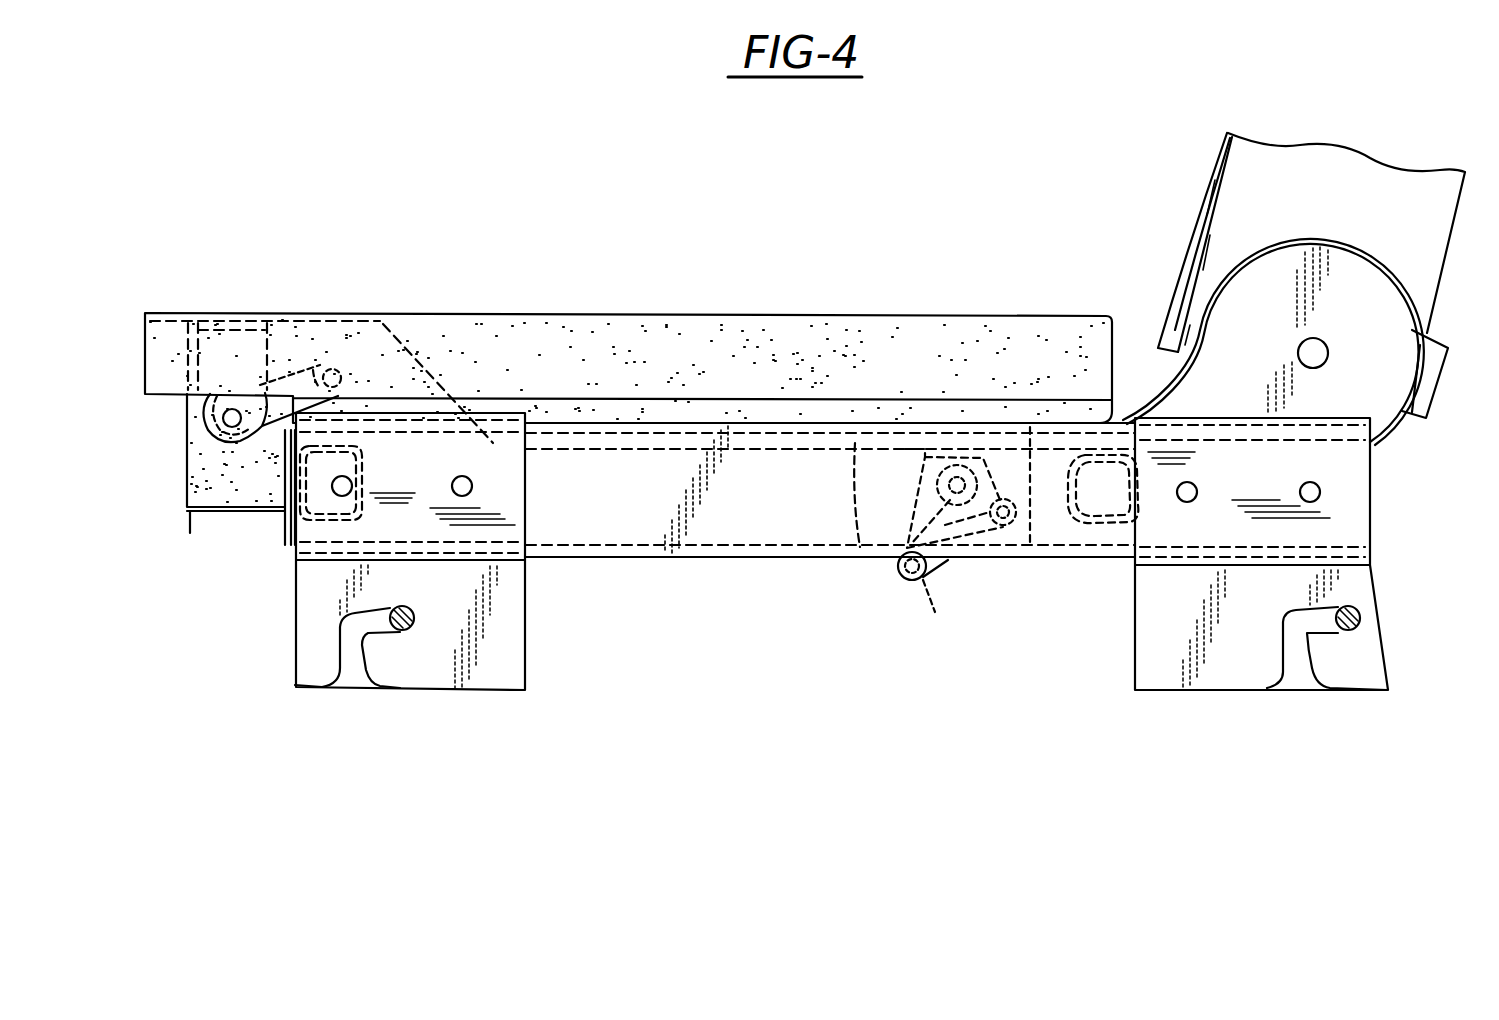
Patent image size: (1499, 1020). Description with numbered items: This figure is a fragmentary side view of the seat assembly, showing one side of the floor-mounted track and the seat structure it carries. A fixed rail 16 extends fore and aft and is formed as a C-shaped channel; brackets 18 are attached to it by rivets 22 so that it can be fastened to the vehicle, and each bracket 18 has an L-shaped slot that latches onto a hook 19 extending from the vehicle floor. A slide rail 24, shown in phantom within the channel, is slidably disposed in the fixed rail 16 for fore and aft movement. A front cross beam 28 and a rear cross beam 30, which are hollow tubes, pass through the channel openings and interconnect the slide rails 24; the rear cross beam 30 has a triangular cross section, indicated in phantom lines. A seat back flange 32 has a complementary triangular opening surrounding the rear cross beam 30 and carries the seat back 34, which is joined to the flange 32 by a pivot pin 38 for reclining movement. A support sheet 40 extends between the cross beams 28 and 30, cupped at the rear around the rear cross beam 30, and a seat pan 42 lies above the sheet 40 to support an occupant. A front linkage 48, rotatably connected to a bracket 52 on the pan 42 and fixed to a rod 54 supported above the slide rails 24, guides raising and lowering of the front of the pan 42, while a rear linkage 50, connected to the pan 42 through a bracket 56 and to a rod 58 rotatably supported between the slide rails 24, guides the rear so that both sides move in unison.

The fixed rail 16 is at (753, 560).
The bracket 18 is at (404, 633).
The hook 19 is at (1356, 612).
The rivet 22 is at (452, 486).
The slide rail 24 is at (858, 557).
The front cross beam 28 is at (287, 557).
The rear cross beam 30 is at (1088, 527).
The seat back flange 32 is at (1393, 328).
The seat back 34 is at (1205, 218).
The pivot pin 38 is at (1298, 353).
The support sheet 40 is at (217, 487).
The seat pan 42 is at (640, 328).
The front linkage 48 is at (280, 407).
The rear linkage 50 is at (948, 560).
The bracket 52 is at (208, 396).
The rod 54 is at (343, 392).
The bracket 56 is at (1010, 447).
The rod 58 is at (1000, 560).